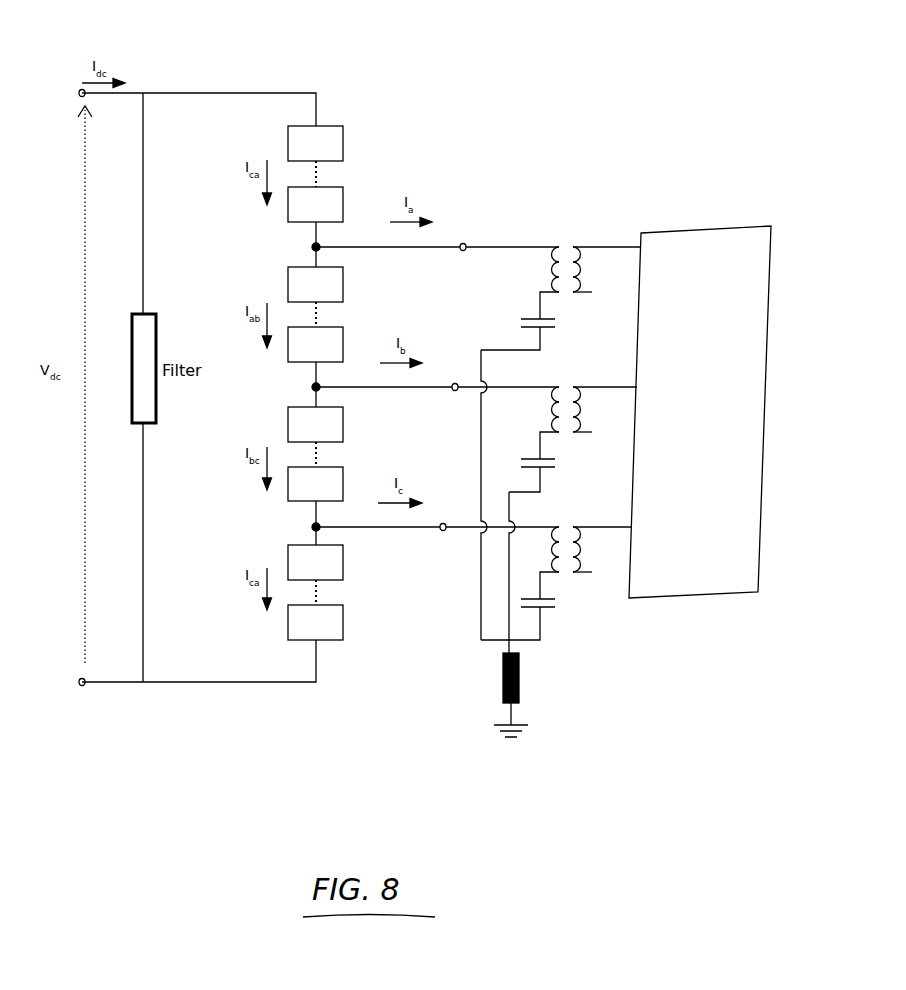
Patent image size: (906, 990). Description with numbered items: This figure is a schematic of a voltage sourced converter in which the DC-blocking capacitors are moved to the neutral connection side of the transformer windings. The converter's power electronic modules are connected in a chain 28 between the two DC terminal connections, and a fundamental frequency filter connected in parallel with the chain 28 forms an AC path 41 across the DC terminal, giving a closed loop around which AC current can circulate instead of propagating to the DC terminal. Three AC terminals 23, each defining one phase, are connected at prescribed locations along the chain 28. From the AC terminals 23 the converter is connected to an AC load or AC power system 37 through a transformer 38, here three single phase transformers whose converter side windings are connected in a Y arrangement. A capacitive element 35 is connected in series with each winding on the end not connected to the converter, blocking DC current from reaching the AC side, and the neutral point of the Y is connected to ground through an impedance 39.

The AC path 41 is at (156, 80).
The chain 28 is at (317, 80).
The AC terminals 23 is at (463, 232).
The transformer 38 is at (571, 230).
The AC power system 37 is at (748, 226).
The capacitive element 35 is at (562, 463).
The impedance 39 is at (525, 680).